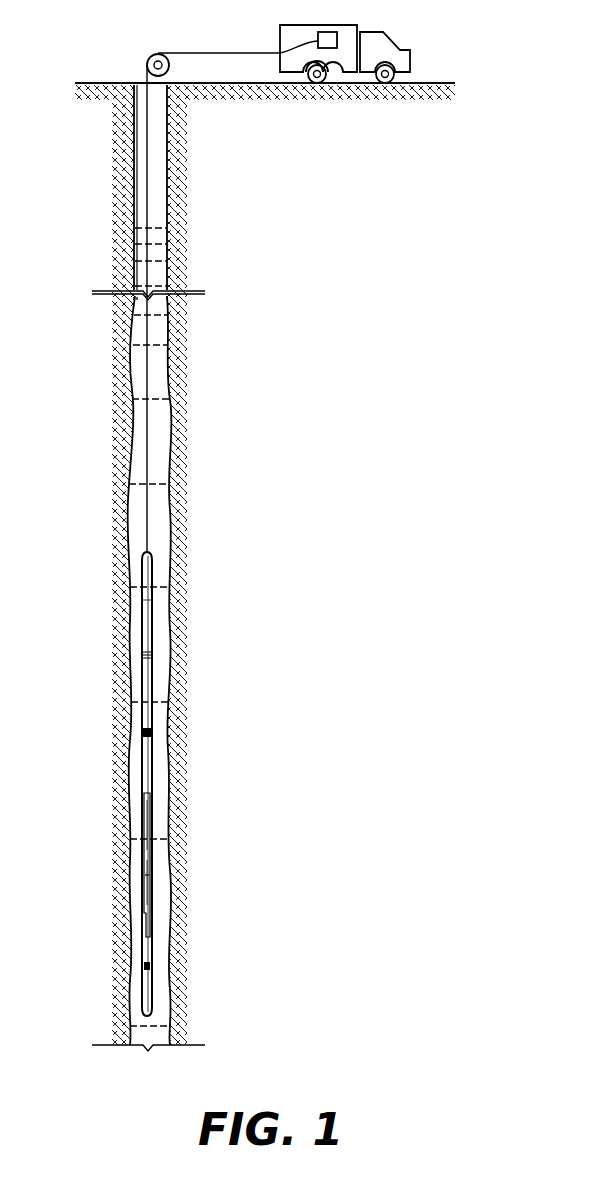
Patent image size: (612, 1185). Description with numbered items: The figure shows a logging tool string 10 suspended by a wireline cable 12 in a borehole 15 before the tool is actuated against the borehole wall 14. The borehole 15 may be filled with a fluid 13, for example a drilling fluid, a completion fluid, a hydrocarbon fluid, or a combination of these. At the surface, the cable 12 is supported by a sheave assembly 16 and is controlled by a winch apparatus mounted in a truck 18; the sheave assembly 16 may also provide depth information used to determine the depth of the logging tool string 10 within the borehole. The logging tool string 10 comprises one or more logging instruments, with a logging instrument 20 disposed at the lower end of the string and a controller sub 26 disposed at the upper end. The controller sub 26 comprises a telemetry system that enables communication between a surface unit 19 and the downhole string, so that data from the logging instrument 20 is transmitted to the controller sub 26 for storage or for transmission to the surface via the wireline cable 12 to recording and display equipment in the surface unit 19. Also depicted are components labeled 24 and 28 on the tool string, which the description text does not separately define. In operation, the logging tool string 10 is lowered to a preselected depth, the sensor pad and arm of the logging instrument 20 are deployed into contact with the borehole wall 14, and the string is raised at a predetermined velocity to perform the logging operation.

The logging tool string 10 is at (187, 756).
The wireline cable 12 is at (147, 372).
The fluid 13 is at (158, 252).
The borehole wall 14 is at (131, 177).
The borehole 15 is at (157, 190).
The sheave assembly 16 is at (152, 56).
The truck 18 is at (280, 34).
The surface unit 19 is at (328, 32).
The logging instrument 20 is at (151, 850).
The downhole tool 24 is at (145, 690).
The controller sub 26 is at (145, 600).
The sensor 28 is at (150, 875).